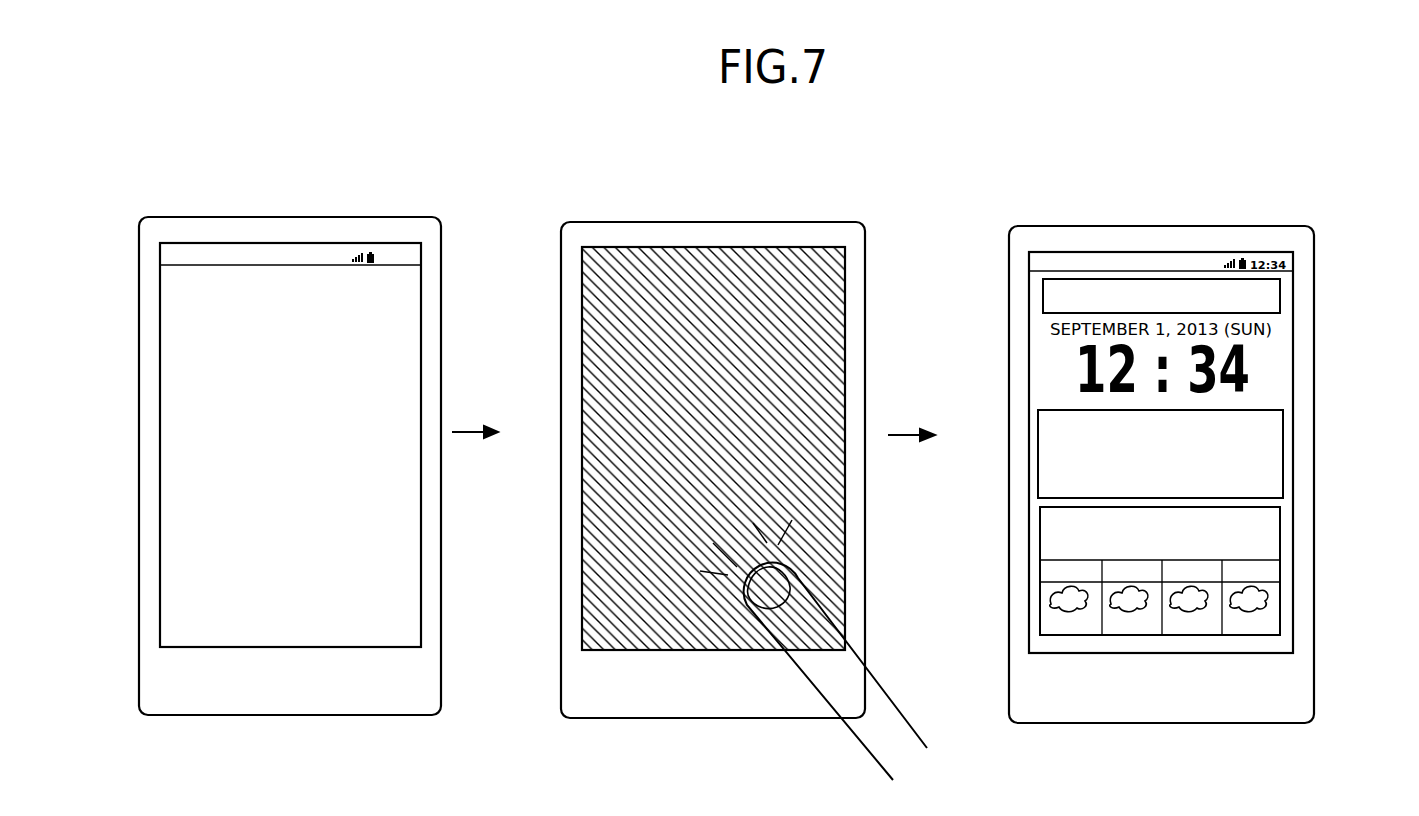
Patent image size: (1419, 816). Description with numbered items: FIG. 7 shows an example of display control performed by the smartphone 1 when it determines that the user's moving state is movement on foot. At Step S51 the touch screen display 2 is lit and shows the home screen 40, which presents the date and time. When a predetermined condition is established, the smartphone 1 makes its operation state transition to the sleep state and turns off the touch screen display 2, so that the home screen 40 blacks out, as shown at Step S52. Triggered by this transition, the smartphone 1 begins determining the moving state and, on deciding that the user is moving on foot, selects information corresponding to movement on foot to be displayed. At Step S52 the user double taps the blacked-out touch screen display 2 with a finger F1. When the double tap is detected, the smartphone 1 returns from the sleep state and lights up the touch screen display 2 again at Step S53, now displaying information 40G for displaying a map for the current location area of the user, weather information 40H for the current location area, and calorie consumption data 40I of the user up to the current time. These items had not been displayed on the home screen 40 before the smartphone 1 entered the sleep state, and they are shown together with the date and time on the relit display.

The smartphone 1 is at (227, 217).
The touch screen display 2 is at (276, 243).
The home screen 40 is at (387, 290).
The calorie consumption data 40I is at (1280, 294).
The map information 40G is at (1283, 450).
The weather information 40H is at (1280, 525).
The finger F1 is at (887, 707).
The Step S51 is at (376, 202).
The Step S52 is at (796, 207).
The Step S53 is at (1246, 210).